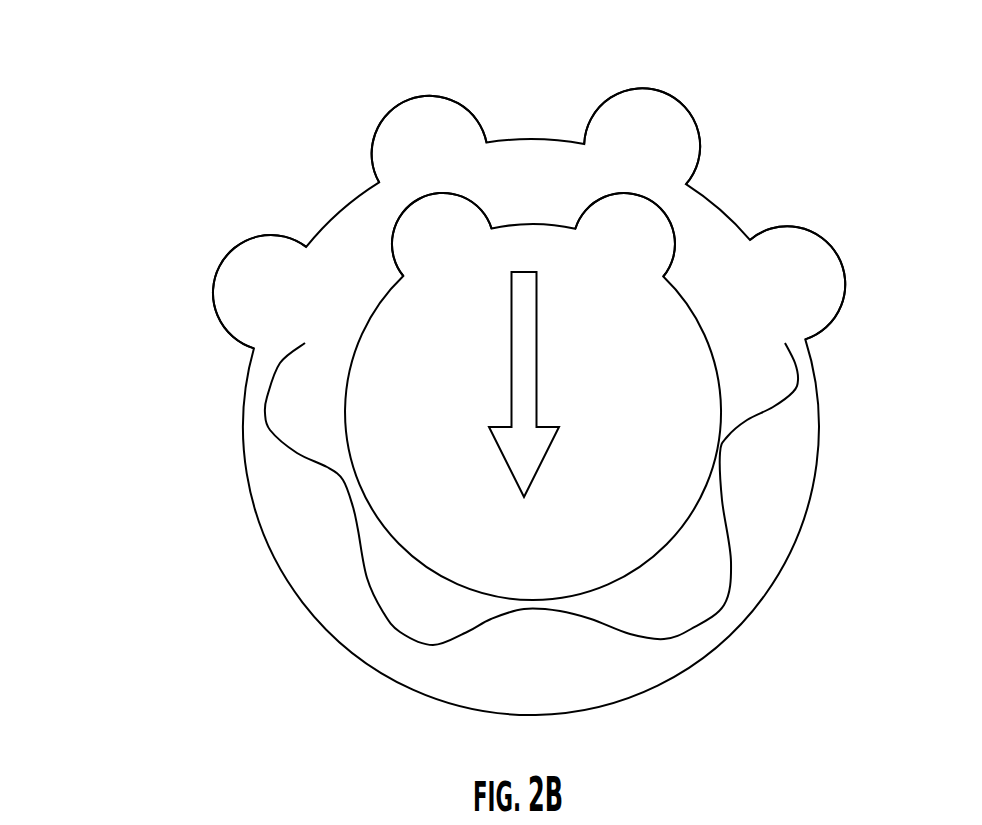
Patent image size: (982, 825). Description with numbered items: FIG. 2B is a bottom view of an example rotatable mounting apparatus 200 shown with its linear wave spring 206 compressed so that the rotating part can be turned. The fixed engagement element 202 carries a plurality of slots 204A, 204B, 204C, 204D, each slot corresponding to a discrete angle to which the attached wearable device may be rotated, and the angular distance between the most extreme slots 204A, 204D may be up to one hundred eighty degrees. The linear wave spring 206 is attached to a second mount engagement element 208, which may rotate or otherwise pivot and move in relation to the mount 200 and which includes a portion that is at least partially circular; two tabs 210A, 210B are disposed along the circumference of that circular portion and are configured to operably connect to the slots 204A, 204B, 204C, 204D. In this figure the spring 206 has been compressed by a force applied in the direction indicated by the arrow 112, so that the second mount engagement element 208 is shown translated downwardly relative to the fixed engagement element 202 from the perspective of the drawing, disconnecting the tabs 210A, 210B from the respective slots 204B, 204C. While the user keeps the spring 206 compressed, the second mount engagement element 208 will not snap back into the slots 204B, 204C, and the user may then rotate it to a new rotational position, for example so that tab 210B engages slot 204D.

The rotatable mounting apparatus 200 is at (101, 108).
The fixed engagement element 202 is at (242, 422).
The slot 204A is at (213, 286).
The slot 204B is at (420, 113).
The slot 204C is at (663, 137).
The slot 204D is at (826, 286).
The linear wave spring 206 is at (270, 433).
The second mount engagement element 208 is at (362, 494).
The tab 210A is at (397, 222).
The tab 210B is at (605, 197).
The arrow 112 is at (533, 398).